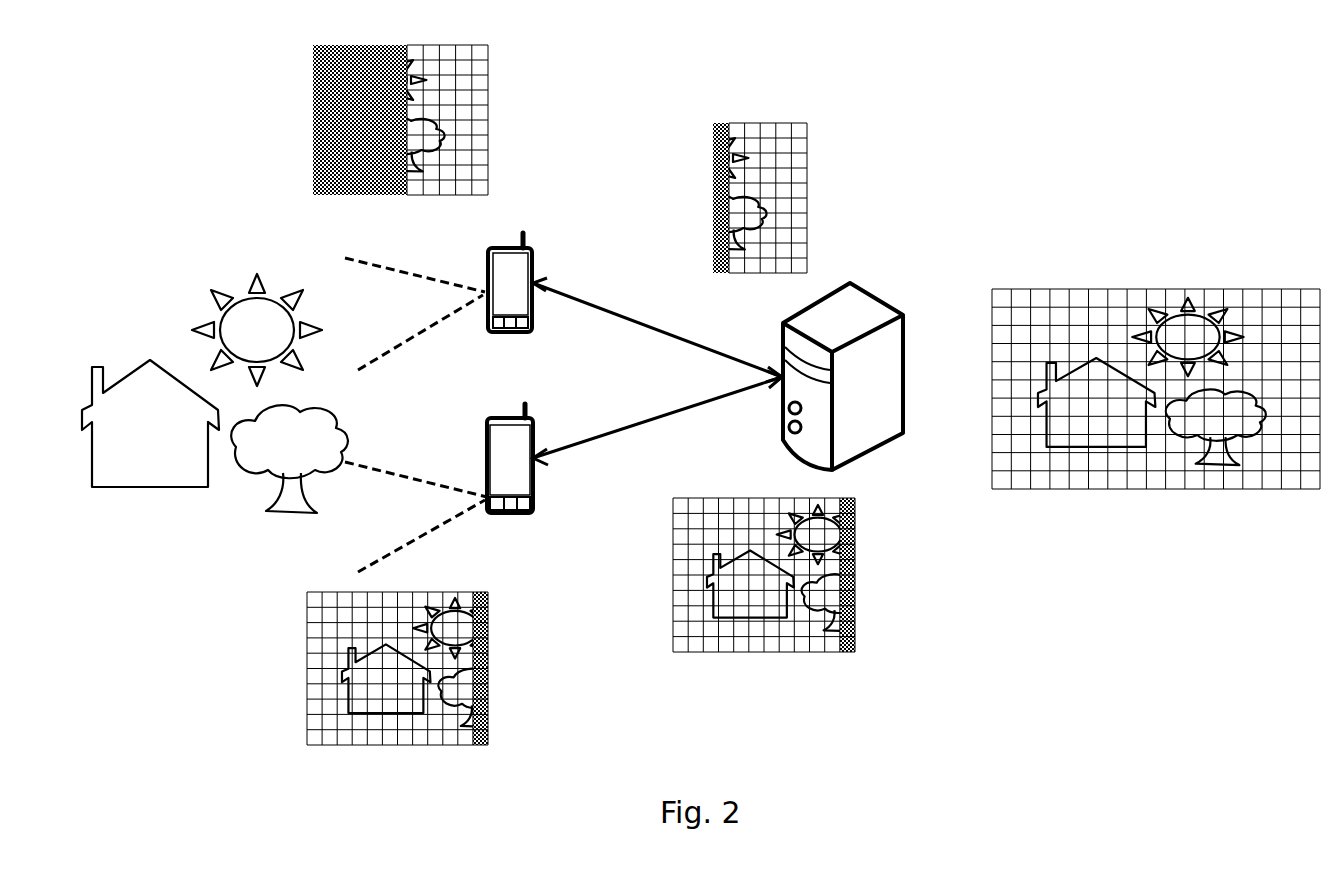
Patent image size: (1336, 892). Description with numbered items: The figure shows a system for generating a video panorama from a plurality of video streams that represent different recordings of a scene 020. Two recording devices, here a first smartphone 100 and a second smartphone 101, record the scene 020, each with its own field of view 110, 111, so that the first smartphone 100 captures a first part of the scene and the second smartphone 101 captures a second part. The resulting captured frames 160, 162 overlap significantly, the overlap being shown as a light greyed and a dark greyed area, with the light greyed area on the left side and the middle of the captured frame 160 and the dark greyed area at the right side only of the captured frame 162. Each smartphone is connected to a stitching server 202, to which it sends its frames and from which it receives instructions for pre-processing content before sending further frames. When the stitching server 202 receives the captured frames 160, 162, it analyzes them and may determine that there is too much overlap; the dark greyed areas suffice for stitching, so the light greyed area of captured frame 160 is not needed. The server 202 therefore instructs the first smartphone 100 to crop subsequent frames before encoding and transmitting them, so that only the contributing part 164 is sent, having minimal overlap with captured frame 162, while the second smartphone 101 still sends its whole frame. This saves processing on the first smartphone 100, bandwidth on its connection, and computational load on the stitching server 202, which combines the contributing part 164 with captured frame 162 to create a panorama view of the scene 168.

The scene 020 is at (130, 535).
The first smartphone 100 is at (532, 333).
The second smartphone 101 is at (512, 517).
The field of view 110 is at (418, 335).
The field of view 111 is at (422, 480).
The captured frame 160 is at (403, 193).
The captured frame 162 is at (397, 738).
The contributing part 164 is at (775, 123).
The panorama view of the scene 168 is at (1145, 489).
The stitching server 202 is at (877, 447).